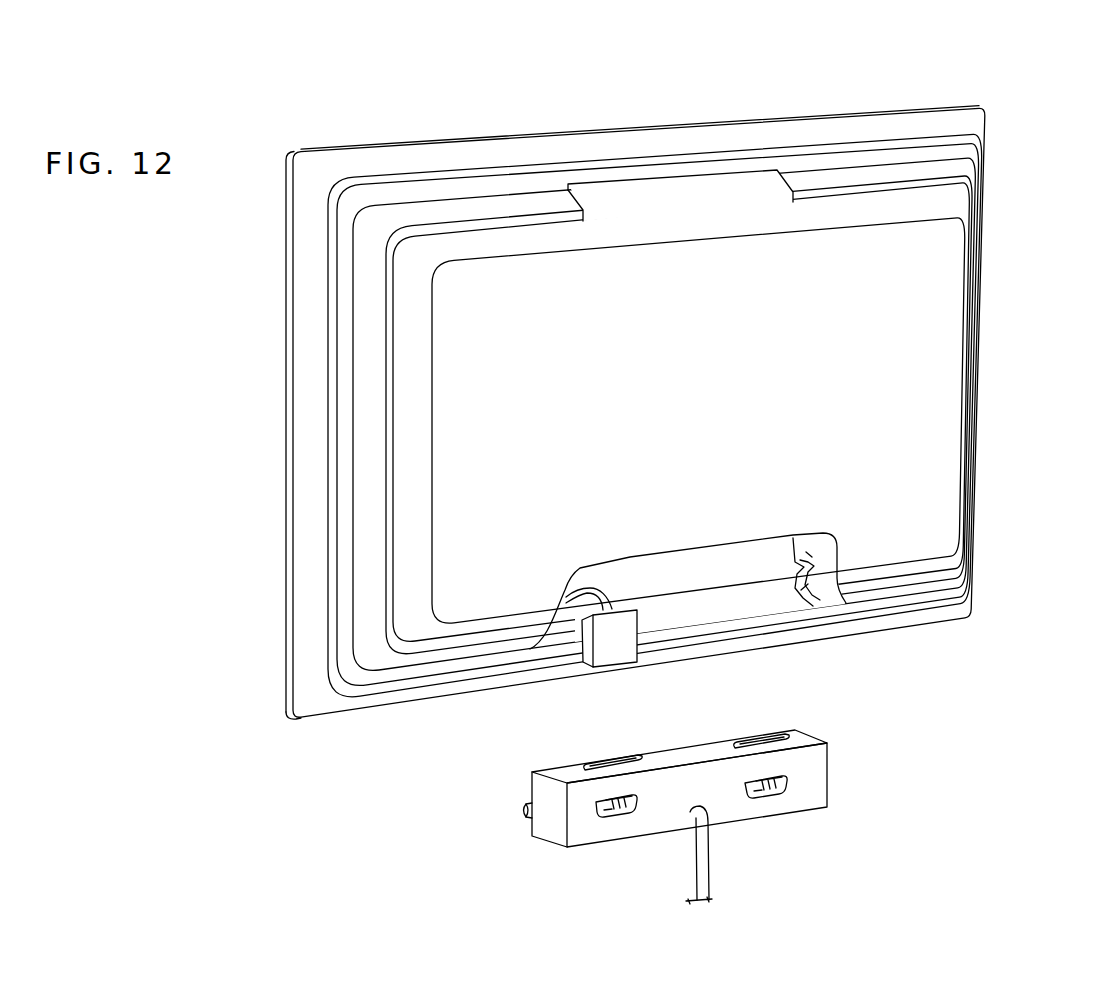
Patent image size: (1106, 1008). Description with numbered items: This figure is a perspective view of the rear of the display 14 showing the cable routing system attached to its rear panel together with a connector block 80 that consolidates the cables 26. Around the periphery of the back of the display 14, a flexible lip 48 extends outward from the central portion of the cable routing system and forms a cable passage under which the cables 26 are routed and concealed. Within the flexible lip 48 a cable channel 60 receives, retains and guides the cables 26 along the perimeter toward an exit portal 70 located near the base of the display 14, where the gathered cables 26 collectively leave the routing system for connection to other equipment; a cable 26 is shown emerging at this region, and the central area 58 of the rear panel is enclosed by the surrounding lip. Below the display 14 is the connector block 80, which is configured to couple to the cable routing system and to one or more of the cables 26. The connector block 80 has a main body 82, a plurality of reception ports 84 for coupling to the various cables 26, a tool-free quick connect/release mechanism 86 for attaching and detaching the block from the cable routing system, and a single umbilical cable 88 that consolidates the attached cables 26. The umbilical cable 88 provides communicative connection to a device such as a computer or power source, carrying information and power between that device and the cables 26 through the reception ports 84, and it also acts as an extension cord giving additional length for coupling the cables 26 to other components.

The display 14 is at (692, 88).
The window opening 58 is at (930, 290).
The flexible lip 48 is at (372, 595).
The exit portal 70 is at (592, 574).
The cable 26 is at (610, 590).
The cable channel 60 is at (812, 568).
The connector block 80 is at (643, 790).
The main body 82 is at (730, 812).
The reception ports 84 is at (604, 758).
The tool-free quick connect/release mechanism 86 is at (607, 814).
The umbilical cable 88 is at (705, 883).